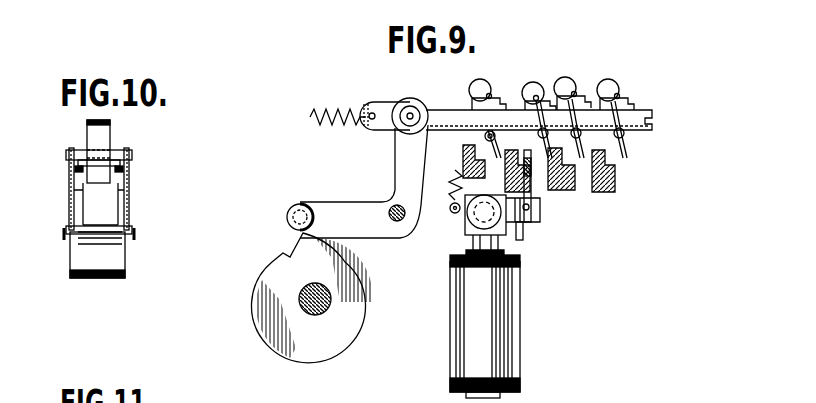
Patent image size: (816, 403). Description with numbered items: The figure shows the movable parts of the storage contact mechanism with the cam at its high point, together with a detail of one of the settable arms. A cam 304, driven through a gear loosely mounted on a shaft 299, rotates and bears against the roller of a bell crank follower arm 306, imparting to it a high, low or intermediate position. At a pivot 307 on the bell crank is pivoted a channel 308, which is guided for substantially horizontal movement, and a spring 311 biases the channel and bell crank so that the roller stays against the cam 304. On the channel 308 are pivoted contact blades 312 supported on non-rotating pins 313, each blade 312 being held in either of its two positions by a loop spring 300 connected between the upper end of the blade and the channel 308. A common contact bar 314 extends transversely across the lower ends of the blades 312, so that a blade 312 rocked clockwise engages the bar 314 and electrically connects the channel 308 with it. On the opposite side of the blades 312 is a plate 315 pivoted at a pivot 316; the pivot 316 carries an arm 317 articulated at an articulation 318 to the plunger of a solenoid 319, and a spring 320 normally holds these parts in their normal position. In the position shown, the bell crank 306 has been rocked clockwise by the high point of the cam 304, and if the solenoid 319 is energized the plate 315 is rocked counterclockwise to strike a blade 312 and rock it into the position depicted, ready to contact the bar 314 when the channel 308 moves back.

In FIG. 9, the shaft 299 is at (302, 307).
In FIG. 10, the loop spring 300 is at (100, 138).
In FIG. 9, the loop spring 300 is at (561, 84).
In FIG. 9, the cam 304 is at (275, 277).
In FIG. 9, the bell crank follower arm 306 is at (392, 177).
In FIG. 9, the pivot 307 is at (413, 111).
In FIG. 10, the channel 308 is at (69, 205).
In FIG. 9, the channel 308 is at (596, 106).
In FIG. 9, the spring 311 is at (334, 108).
In FIG. 10, the contact blade 312 is at (80, 250).
In FIG. 9, the contact blade 312 is at (540, 112).
In FIG. 10, the pin 313 is at (130, 230).
In FIG. 9, the pin 313 is at (526, 136).
In FIG. 9, the common contact bar 314 is at (510, 165).
In FIG. 9, the plate 315 is at (538, 196).
In FIG. 9, the pivot 316 is at (548, 222).
In FIG. 9, the arm 317 is at (528, 234).
In FIG. 9, the articulation 318 is at (470, 236).
In FIG. 9, the solenoid 319 is at (512, 306).
In FIG. 9, the spring 320 is at (456, 196).